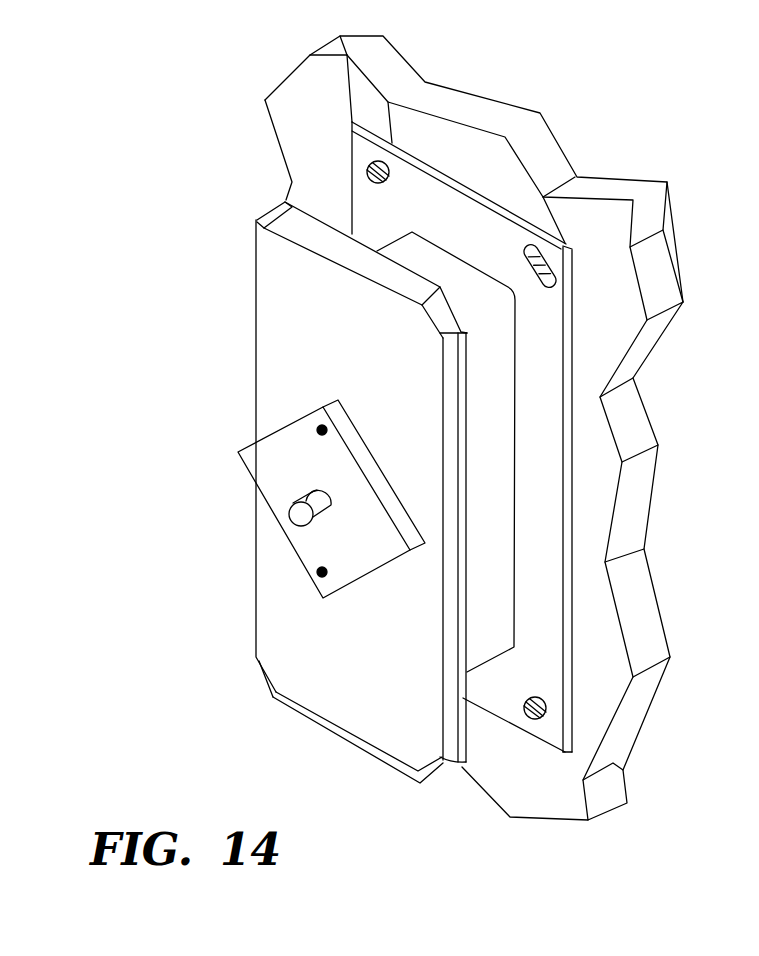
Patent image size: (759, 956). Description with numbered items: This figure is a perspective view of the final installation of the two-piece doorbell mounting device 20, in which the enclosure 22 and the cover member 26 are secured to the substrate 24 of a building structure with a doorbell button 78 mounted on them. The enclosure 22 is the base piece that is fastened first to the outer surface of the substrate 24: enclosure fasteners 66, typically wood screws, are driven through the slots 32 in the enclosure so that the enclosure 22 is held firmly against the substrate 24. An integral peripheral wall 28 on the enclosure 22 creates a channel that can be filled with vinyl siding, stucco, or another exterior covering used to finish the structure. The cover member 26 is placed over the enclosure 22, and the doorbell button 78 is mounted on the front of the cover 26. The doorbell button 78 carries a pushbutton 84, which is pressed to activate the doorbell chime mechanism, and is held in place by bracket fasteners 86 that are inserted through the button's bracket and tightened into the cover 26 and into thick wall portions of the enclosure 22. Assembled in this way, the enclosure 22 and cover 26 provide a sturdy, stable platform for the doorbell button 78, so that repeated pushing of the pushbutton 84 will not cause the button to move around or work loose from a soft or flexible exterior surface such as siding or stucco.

The two-piece doorbell mounting device 20 is at (225, 215).
The enclosure 22 is at (441, 212).
The substrate 24 is at (660, 277).
The cover member 26 is at (306, 306).
The integral peripheral wall 28 is at (509, 452).
The slots 32 is at (545, 228).
The enclosure fasteners 66 is at (566, 241).
The doorbell button 78 is at (277, 443).
The pushbutton 84 is at (308, 515).
The bracket fasteners 86 is at (318, 427).